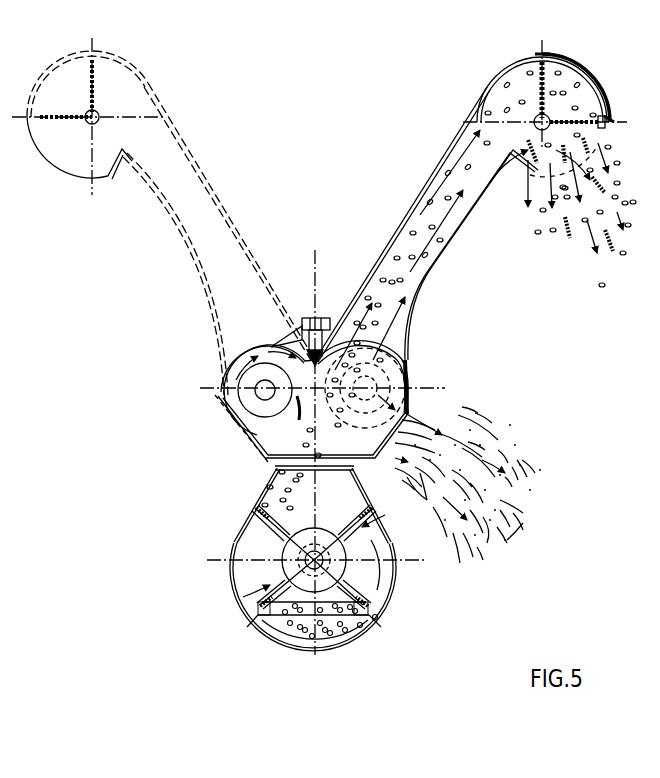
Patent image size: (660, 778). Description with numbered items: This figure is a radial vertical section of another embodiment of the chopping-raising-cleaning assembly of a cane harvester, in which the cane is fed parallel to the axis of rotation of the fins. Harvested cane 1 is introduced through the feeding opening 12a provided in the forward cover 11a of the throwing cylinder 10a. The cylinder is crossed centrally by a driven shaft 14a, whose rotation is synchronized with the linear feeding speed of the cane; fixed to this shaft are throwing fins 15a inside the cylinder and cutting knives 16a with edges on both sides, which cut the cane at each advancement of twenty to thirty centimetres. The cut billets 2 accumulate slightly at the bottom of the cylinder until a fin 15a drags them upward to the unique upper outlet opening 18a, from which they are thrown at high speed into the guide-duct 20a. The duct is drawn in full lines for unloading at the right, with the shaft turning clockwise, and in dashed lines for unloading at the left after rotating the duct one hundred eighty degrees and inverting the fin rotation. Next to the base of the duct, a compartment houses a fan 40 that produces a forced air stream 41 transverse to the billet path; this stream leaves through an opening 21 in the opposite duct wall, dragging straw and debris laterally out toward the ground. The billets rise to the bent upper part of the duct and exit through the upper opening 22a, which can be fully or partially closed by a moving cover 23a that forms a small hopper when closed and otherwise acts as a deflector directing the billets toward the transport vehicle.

The cane 1 is at (300, 614).
The cut billets 2 is at (567, 230).
The throwing cylinder 10a is at (350, 633).
The forward cover 11a is at (382, 553).
The feeding opening 12a is at (272, 623).
The driven shaft 14a is at (297, 560).
The throwing fins 15a is at (268, 525).
The cutting knives 16a is at (372, 525).
The upper outlet opening 18a is at (338, 470).
The guide-duct 20a is at (142, 73).
The opening in duct wall 21 is at (407, 417).
The upper opening of duct 22a is at (528, 182).
The moving cover 23a is at (572, 60).
The fan 40 is at (262, 390).
The forced air stream 41 is at (488, 467).